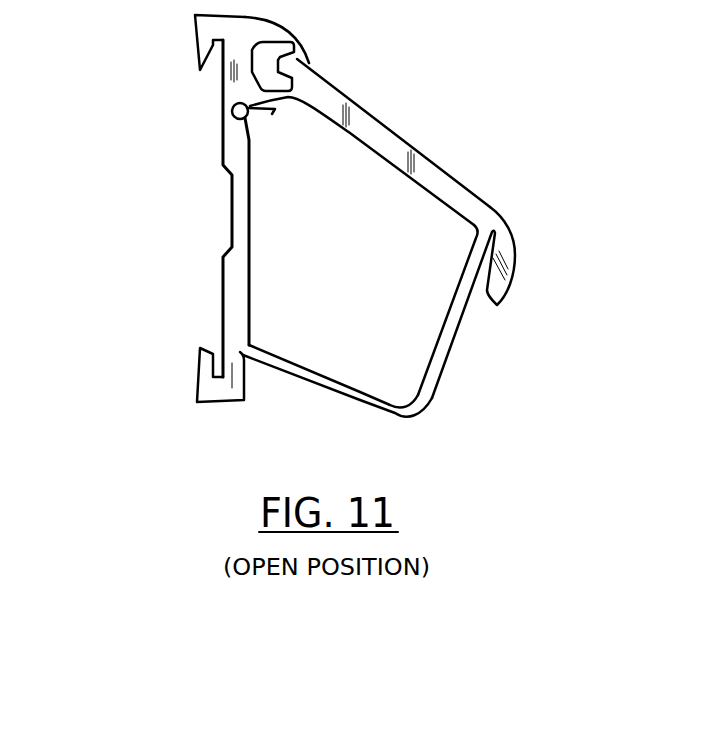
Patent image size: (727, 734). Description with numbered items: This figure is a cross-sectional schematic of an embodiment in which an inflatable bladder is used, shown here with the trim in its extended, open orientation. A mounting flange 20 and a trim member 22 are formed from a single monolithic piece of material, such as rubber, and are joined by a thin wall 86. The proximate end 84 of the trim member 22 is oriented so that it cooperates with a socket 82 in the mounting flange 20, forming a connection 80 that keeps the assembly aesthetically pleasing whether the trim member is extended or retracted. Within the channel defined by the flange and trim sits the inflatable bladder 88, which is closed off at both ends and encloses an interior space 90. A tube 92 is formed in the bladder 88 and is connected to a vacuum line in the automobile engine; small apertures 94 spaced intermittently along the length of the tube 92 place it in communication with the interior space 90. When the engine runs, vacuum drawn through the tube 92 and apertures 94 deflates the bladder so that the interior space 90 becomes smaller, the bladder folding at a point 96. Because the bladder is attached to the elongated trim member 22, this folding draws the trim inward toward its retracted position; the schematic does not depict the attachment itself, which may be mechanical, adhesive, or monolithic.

The mounting flange 20 is at (260, 222).
The trim member 22 is at (350, 256).
The connection 80 is at (310, 62).
The socket 82 is at (245, 31).
The proximate end 84 is at (293, 70).
The thin wall 86 is at (232, 98).
The inflatable bladder 88 is at (323, 353).
The interior space 90 is at (290, 353).
The tube 92 is at (236, 97).
The small apertures 94 is at (262, 112).
The fold point 96 is at (410, 397).